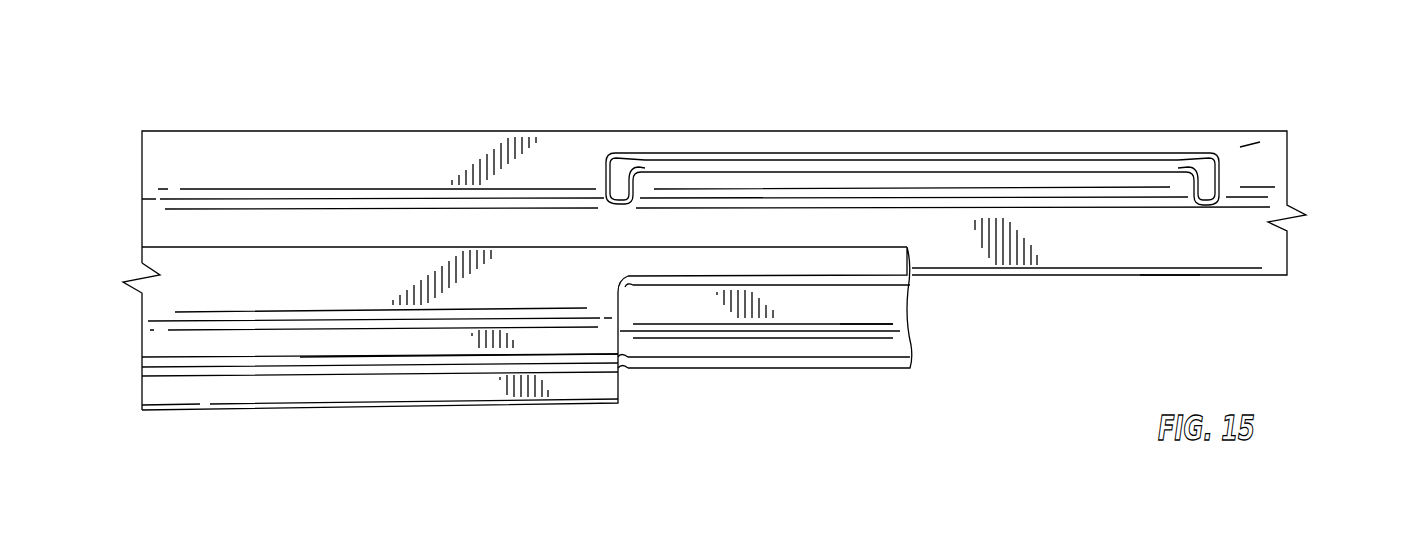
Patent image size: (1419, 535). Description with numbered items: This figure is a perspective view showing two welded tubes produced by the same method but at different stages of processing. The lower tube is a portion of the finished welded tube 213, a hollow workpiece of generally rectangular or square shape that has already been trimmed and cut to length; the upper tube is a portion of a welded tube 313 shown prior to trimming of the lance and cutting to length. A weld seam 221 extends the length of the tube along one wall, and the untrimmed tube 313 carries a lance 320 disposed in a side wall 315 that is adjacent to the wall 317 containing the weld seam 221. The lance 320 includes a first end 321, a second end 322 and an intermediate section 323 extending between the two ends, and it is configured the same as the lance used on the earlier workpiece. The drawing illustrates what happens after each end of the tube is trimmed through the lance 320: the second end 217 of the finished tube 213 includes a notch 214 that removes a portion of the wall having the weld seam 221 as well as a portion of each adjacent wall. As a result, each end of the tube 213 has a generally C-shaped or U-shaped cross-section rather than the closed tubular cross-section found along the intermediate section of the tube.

The welded tube 213 is at (385, 359).
The notch 214 is at (813, 349).
The second end 217 is at (893, 305).
The weld seam 221 is at (404, 356).
The welded tube 313 is at (1165, 123).
The wall 315 is at (1250, 145).
The wall 317 is at (1170, 276).
The lance 320 is at (948, 141).
The first end 321 is at (1207, 178).
The second end 322 is at (626, 153).
The intermediate section 323 is at (780, 165).